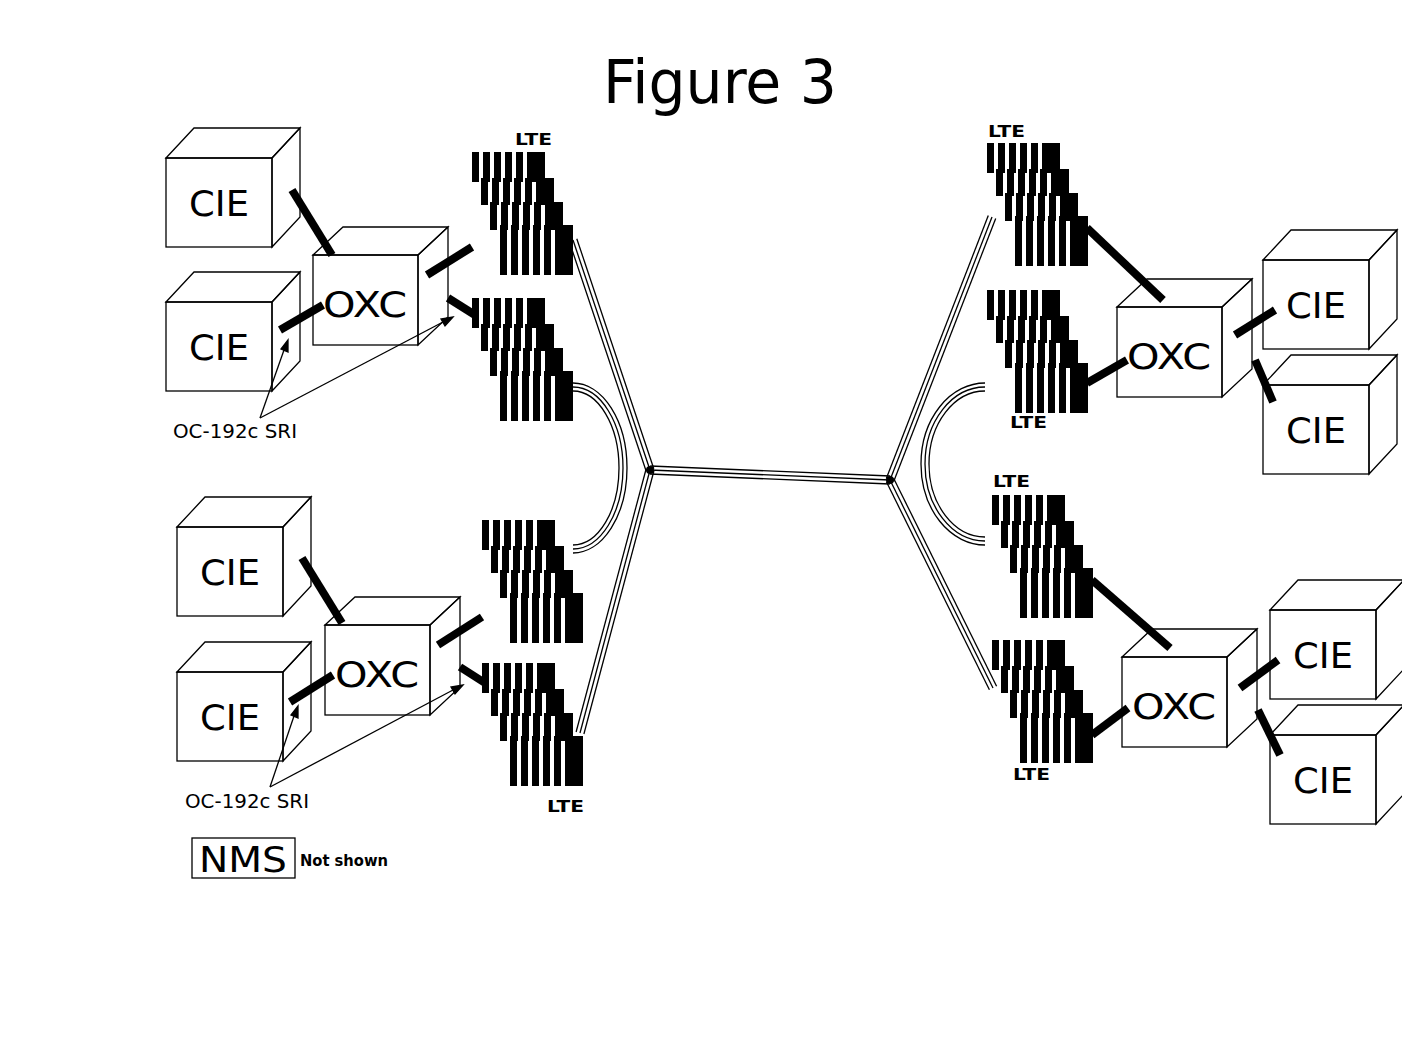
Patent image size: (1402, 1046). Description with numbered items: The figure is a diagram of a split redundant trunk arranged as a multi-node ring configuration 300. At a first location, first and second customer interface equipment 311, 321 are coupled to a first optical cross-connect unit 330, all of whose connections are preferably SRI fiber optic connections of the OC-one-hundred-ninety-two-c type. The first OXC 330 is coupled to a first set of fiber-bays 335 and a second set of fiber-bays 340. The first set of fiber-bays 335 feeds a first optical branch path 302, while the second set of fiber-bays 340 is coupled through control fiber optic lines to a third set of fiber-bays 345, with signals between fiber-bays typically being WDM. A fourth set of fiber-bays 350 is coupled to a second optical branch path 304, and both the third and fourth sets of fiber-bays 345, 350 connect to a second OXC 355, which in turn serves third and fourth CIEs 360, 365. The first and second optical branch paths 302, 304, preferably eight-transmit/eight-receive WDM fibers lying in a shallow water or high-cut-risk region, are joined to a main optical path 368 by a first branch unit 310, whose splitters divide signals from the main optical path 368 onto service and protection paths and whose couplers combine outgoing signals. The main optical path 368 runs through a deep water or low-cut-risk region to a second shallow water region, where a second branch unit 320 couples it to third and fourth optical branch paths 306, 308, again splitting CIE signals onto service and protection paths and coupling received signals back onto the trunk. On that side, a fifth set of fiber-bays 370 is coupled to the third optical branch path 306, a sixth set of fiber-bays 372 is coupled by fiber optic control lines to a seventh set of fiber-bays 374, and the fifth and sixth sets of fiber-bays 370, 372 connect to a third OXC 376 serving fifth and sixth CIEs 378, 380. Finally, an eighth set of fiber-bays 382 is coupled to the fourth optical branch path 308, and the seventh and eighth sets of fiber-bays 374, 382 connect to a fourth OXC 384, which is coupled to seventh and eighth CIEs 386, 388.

The multi-node ring configuration 300 is at (780, 821).
The first optical branch path 302 is at (618, 320).
The second optical branch path 304 is at (620, 650).
The third optical branch path 306 is at (912, 370).
The fourth optical branch path 308 is at (934, 613).
The first branch unit 310 is at (664, 438).
The first customer interface equipment 311 is at (233, 187).
The second branch unit 320 is at (872, 503).
The second customer interface equipment 321 is at (233, 331).
The first optical cross-connect unit 330 is at (377, 267).
The first set of fiber-bays 335 is at (564, 190).
The second set of fiber-bays 340 is at (466, 381).
The third set of fiber-bays 345 is at (468, 553).
The fourth set of fiber-bays 350 is at (484, 754).
The second optical cross-connect unit 355 is at (387, 636).
The third customer interface equipment 360 is at (244, 556).
The fourth customer interface equipment 365 is at (244, 701).
The main optical path 368 is at (742, 489).
The fifth set of fiber-bays 370 is at (1084, 179).
The sixth set of fiber-bays 372 is at (1069, 418).
The seventh set of fiber-bays 374 is at (1083, 525).
The third optical cross-connect unit 376 is at (1181, 315).
The fifth customer interface equipment 378 is at (1330, 289).
The sixth customer interface equipment 380 is at (1330, 414).
The eighth set of fiber-bays 382 is at (982, 728).
The fourth optical cross-connect unit 384 is at (1186, 667).
The seventh customer interface equipment 386 is at (1336, 639).
The eighth customer interface equipment 388 is at (1336, 764).